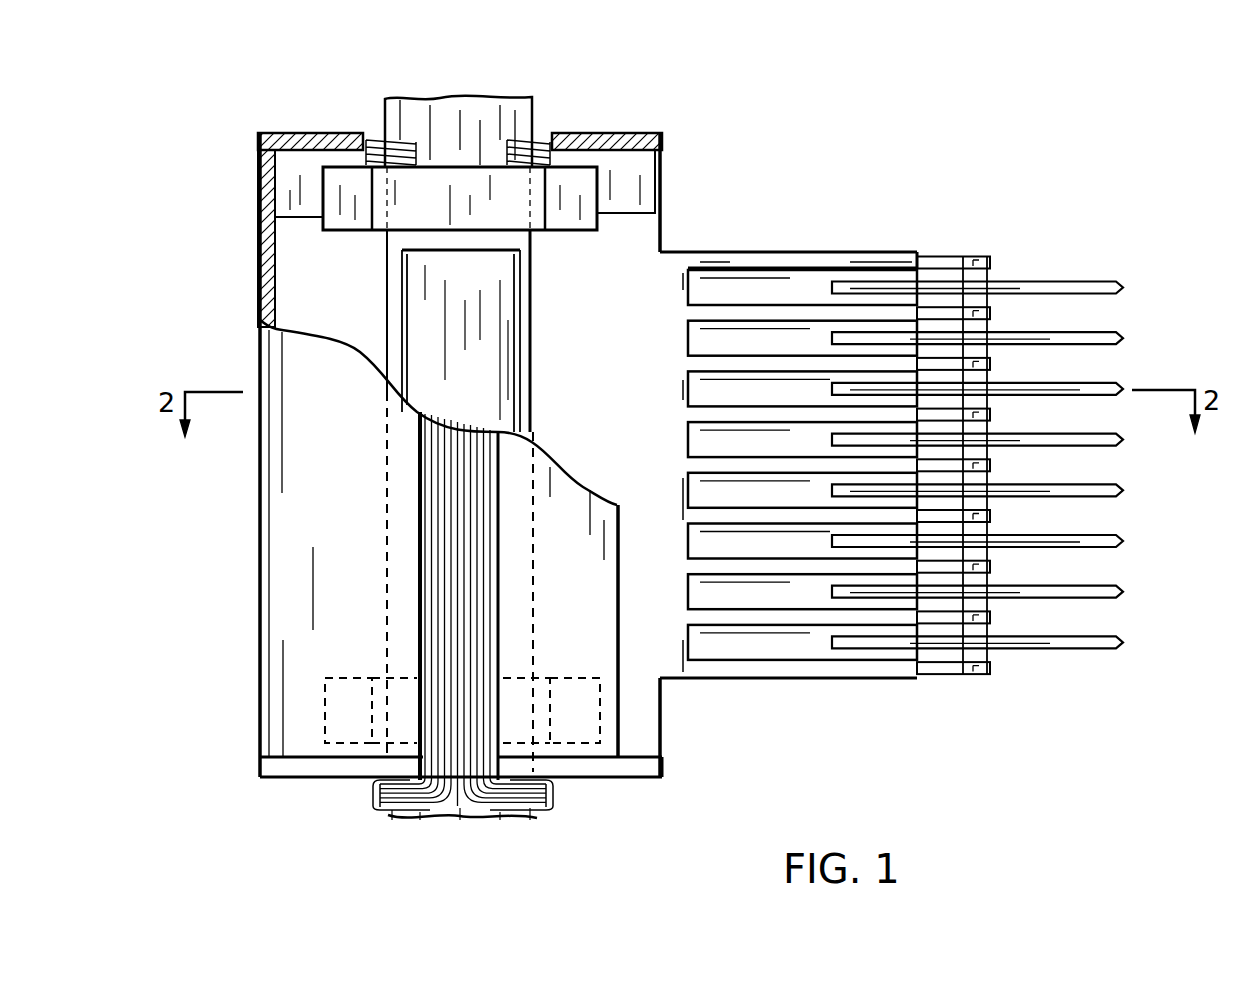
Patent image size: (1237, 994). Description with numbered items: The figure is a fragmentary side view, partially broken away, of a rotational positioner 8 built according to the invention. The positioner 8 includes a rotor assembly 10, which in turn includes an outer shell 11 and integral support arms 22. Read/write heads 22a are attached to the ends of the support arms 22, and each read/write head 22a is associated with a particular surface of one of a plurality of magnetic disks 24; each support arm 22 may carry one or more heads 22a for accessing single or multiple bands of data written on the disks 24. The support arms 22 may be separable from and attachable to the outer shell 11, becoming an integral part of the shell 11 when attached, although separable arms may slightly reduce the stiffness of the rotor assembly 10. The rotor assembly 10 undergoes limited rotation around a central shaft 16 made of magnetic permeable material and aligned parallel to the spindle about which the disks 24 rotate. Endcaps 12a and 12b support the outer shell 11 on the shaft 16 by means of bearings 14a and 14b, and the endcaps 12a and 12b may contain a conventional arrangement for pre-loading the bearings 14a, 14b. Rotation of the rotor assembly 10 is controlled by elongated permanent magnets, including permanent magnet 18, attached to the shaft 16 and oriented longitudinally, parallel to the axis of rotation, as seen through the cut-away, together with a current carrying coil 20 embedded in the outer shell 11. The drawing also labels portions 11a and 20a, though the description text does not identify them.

The rotational positioner 8 is at (325, 825).
The rotor assembly 10 is at (233, 543).
The outer shell 11 is at (282, 610).
The optical fibers 11a is at (430, 498).
The endcap 12a is at (297, 188).
The endcap 12b is at (660, 763).
The bearing 14a is at (358, 183).
The bearing 14b is at (585, 757).
The central shaft 16 is at (492, 110).
The permanent magnet 18 is at (422, 312).
The current carrying coil 20 is at (455, 609).
The fiber coil 20a is at (480, 617).
The support arm 22 is at (854, 435).
The read/write head 22a is at (987, 273).
The magnetic disk 24 is at (1093, 287).